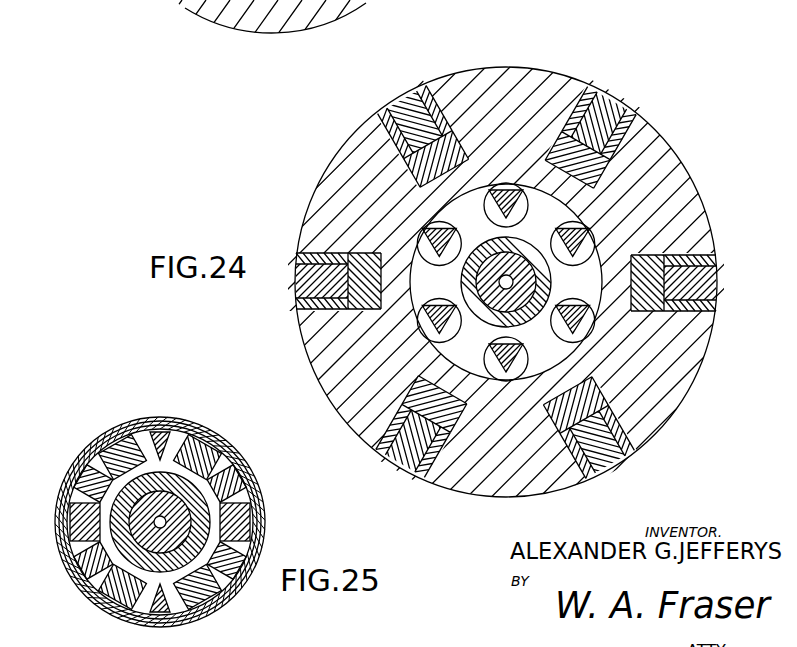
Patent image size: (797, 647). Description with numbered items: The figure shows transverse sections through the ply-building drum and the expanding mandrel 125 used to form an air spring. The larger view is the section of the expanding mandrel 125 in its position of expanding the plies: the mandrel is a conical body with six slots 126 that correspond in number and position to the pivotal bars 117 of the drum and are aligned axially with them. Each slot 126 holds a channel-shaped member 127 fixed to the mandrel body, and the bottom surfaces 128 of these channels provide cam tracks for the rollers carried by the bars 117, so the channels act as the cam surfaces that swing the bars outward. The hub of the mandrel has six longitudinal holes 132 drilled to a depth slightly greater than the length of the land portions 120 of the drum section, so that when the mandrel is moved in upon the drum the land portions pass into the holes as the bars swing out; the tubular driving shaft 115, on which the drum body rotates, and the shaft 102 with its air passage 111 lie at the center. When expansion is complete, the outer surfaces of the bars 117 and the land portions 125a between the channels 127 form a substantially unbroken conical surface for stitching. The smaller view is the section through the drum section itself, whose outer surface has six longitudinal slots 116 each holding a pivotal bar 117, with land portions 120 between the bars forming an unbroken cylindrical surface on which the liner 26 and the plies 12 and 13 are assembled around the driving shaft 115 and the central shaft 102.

In FIG. 24, the expanding mandrel 125 is at (672, 139).
In FIG. 24, the land portions 125a is at (530, 75).
In FIG. 24, the slots 126 is at (390, 104).
In FIG. 24, the channel-shaped member 127 is at (446, 128).
In FIG. 24, the bar 117 is at (397, 96).
In FIG. 25, the bar 117 is at (123, 440).
In FIG. 24, the bottom surfaces 128 is at (703, 284).
In FIG. 24, the longitudinal holes 132 is at (457, 239).
In FIG. 24, the land portions 120 is at (511, 211).
In FIG. 25, the land portions 120 is at (158, 434).
In FIG. 24, the tubular driving shaft 115 is at (544, 285).
In FIG. 25, the tubular driving shaft 115 is at (194, 518).
In FIG. 24, the shaft 102 is at (518, 300).
In FIG. 25, the shaft 102 is at (178, 532).
In FIG. 24, the passage 111 is at (501, 282).
In FIG. 25, the passage 111 is at (163, 518).
In FIG. 25, the longitudinal slots 116 is at (216, 446).
In FIG. 25, the ply 12 is at (101, 432).
In FIG. 25, the ply 13 is at (80, 463).
In FIG. 25, the liner 26 is at (74, 481).